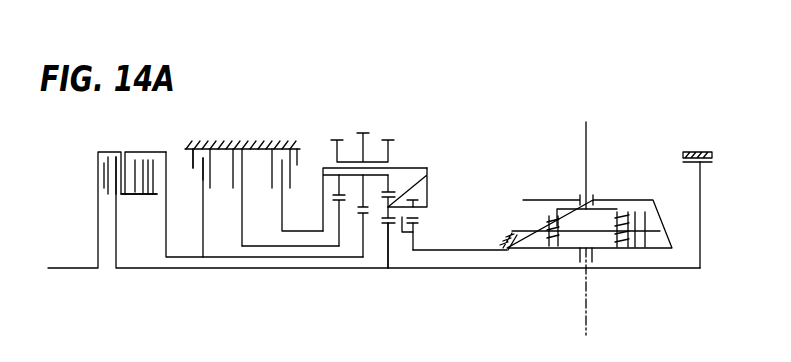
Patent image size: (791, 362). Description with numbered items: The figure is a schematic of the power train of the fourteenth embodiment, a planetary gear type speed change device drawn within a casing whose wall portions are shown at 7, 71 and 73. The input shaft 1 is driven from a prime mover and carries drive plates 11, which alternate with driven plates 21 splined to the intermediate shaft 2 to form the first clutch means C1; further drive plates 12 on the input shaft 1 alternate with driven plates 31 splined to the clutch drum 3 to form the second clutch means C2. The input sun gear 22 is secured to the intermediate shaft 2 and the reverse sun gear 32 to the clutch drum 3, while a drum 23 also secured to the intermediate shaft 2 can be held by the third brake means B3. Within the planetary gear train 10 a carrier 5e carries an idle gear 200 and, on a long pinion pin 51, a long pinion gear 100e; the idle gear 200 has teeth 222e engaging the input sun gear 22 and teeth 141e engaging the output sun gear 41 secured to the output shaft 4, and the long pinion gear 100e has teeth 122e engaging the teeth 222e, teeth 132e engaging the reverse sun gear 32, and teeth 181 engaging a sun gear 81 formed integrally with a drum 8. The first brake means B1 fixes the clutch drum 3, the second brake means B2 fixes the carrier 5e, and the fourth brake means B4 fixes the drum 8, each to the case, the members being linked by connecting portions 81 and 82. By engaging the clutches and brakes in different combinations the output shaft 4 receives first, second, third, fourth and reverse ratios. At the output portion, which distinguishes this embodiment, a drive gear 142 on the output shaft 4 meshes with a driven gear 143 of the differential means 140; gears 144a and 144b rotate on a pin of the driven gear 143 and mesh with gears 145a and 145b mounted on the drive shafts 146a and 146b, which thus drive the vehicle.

The input shaft 1 is at (66, 268).
The intermediate shaft 2 is at (167, 270).
The clutch drum 3 is at (167, 236).
The output shaft 4 is at (474, 253).
The carrier 5e is at (430, 193).
The transmission casing 7 is at (205, 148).
The drum 8 is at (278, 248).
The planetary gear train 10 is at (342, 183).
The drive plates 11 is at (110, 151).
The drive plates 12 is at (158, 193).
The driven plates 21 is at (115, 173).
The input sun gear 22 is at (393, 253).
The drum 23 is at (703, 172).
The driven plates 31 is at (143, 151).
The reverse sun gear 32 is at (203, 203).
The output sun gear 41 is at (418, 253).
The long pinion pin 51 is at (282, 196).
The casing wall 71 is at (196, 146).
The casing wall 73 is at (298, 151).
The sun gear 81 is at (348, 248).
The connecting member 82 is at (243, 183).
The long pinion gear 100e is at (355, 160).
The teeth 122e is at (389, 177).
The teeth 132e is at (366, 152).
The differential means 140 is at (585, 227).
The teeth 141e is at (426, 212).
The drive gear 142 is at (508, 254).
The driven gear 143 is at (515, 220).
The gear 144a is at (640, 230).
The gear 144b is at (548, 216).
The gear 145a is at (617, 210).
The gear 145b is at (594, 262).
The drive shaft 146a is at (588, 140).
The drive shaft 146b is at (596, 312).
The teeth 181 is at (337, 153).
The idle gear 200 is at (414, 238).
The teeth 222e is at (427, 170).
The first brake means B1 is at (195, 167).
The second brake means B2 is at (287, 148).
The third brake means B3 is at (698, 150).
The fourth brake means B4 is at (245, 148).
The first clutch means C1 is at (78, 217).
The second clutch means C2 is at (139, 198).